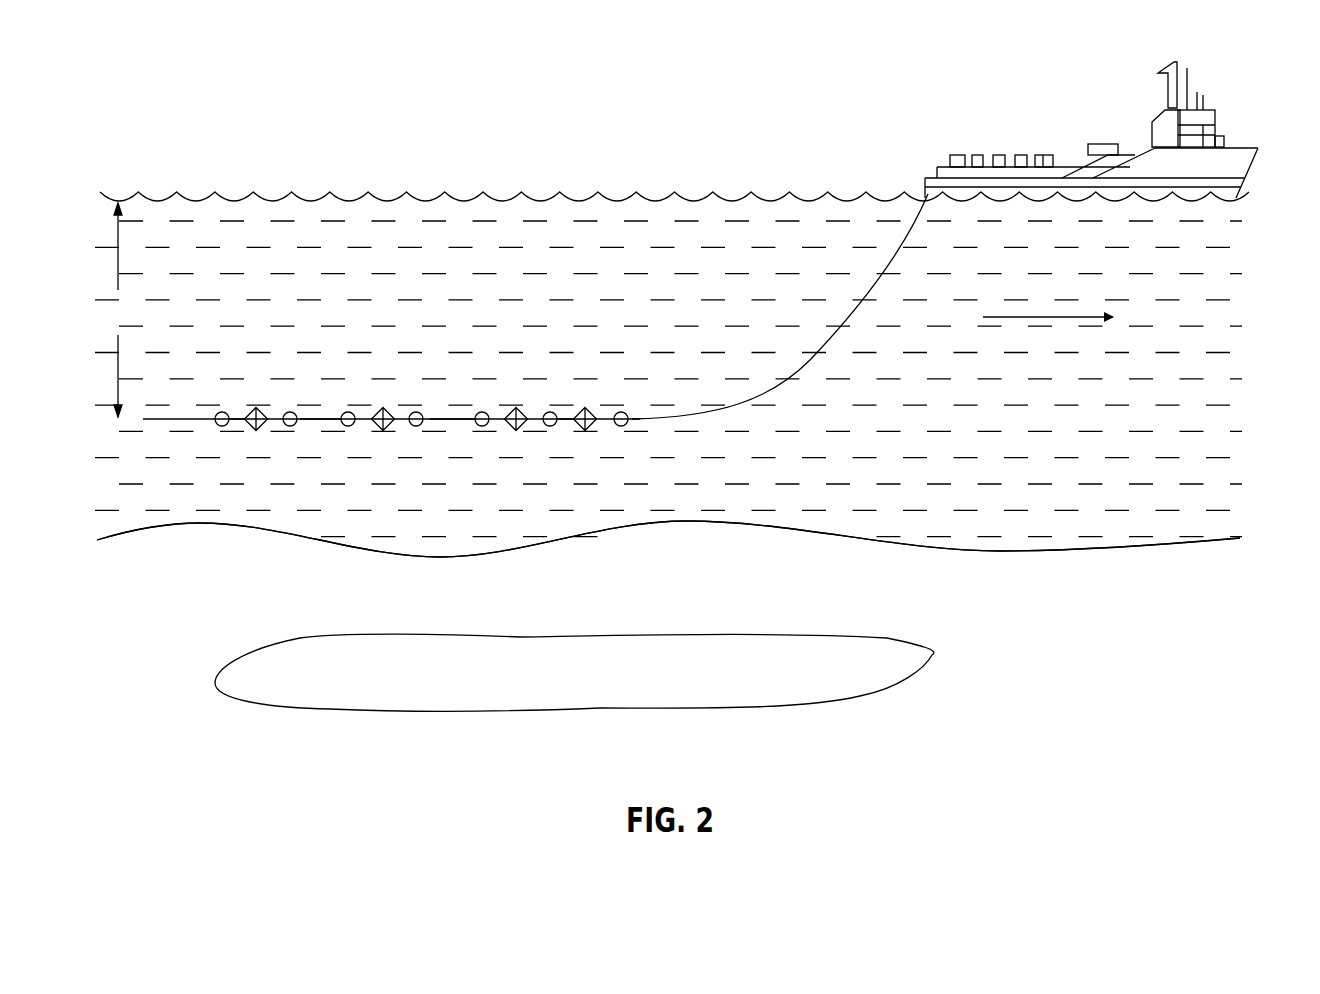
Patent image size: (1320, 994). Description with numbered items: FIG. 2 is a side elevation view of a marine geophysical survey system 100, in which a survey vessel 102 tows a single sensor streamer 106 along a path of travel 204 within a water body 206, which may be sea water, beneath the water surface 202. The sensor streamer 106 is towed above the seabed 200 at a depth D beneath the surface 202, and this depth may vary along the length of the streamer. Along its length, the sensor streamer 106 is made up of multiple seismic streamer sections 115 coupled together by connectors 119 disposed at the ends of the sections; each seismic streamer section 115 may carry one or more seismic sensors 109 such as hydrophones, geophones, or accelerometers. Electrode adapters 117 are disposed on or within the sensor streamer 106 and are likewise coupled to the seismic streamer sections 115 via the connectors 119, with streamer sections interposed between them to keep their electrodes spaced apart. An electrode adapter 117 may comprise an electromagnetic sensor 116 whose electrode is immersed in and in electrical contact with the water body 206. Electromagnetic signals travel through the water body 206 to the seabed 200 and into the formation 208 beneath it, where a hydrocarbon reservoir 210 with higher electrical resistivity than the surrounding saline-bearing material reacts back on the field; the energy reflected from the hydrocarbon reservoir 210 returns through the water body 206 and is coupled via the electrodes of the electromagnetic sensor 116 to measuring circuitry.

The marine geophysical survey system 100 is at (283, 58).
The survey vessel 102 is at (1240, 146).
The sensor streamer 106 is at (157, 425).
The seismic sensors 109 is at (416, 411).
The seismic streamer sections 115 is at (326, 406).
The electromagnetic sensor 116 is at (550, 411).
The electrode adapters 117 is at (236, 429).
The connectors 119 is at (522, 429).
The seabed 200 is at (842, 533).
The water surface 202 is at (385, 191).
The path of travel 204 is at (1079, 313).
The water body 206 is at (985, 423).
The formation 208 is at (985, 603).
The hydrocarbon reservoir 210 is at (880, 691).
The depth D is at (117, 310).